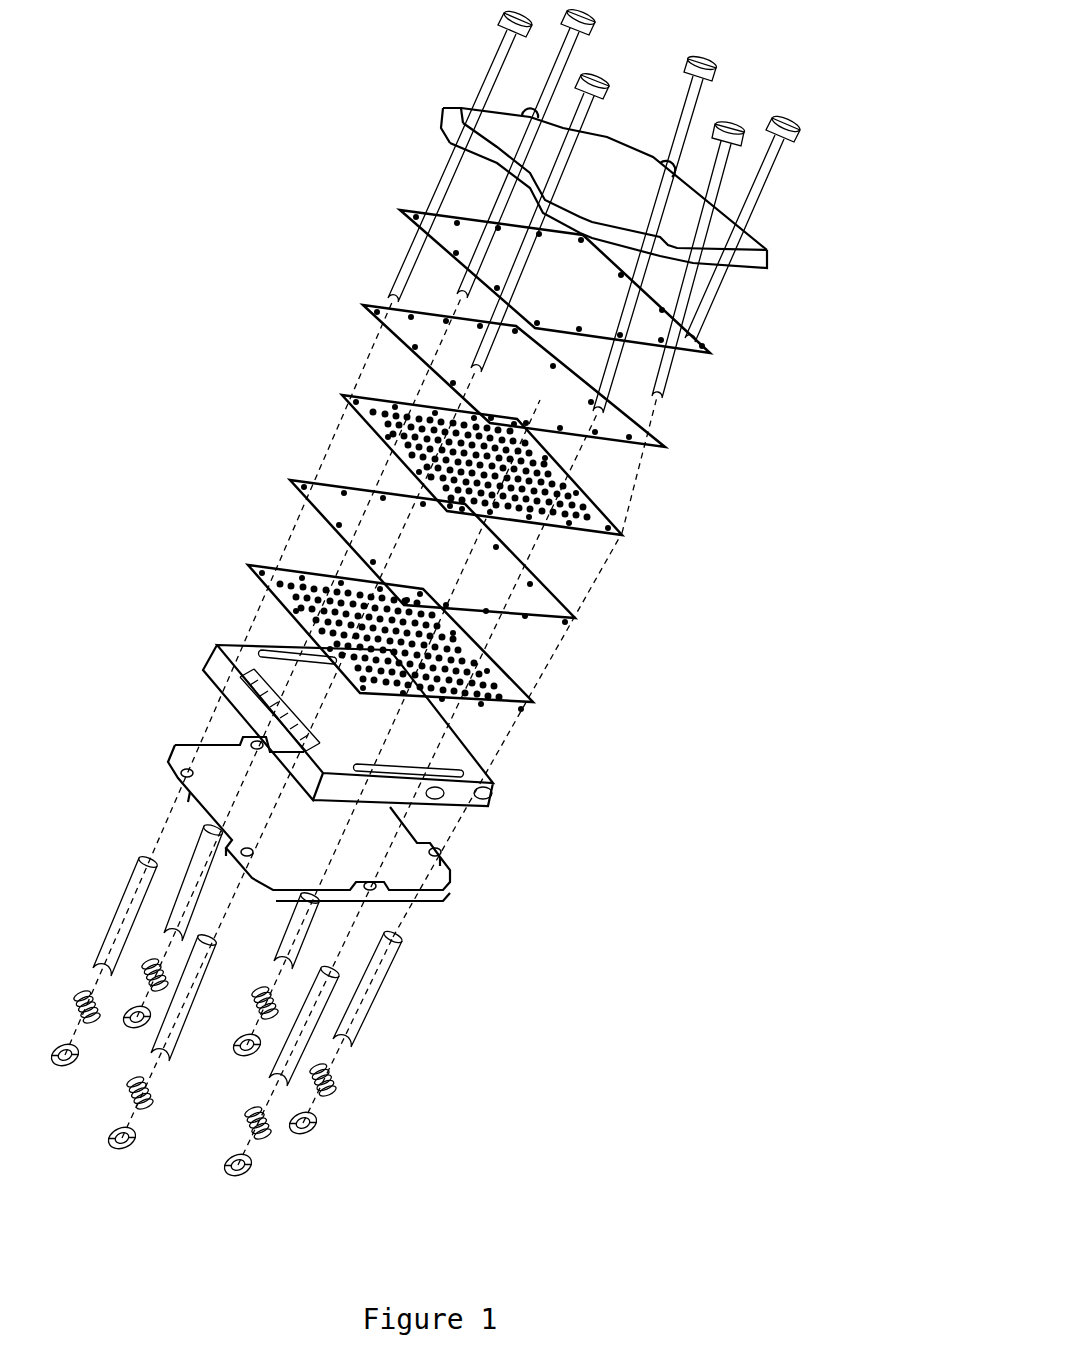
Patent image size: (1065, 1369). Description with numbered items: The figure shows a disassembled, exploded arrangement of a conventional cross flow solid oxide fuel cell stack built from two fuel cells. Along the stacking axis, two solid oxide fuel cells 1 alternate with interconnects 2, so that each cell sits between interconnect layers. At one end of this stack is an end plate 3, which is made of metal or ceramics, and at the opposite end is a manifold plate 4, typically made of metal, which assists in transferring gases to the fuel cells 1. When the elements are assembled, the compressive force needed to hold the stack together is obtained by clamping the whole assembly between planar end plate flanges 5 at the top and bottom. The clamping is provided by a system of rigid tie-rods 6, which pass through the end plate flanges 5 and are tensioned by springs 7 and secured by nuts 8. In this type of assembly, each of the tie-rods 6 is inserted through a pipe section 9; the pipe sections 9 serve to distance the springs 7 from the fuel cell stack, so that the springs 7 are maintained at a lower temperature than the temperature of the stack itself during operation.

The solid oxide fuel cell 1 is at (563, 390).
The interconnect 2 is at (553, 467).
The end plate 3 is at (604, 283).
The manifold plate 4 is at (390, 742).
The end plate flange 5 is at (603, 173).
The tie-rod 6 is at (500, 67).
The spring 7 is at (333, 1070).
The nut 8 is at (320, 1137).
The pipe section 9 is at (390, 992).